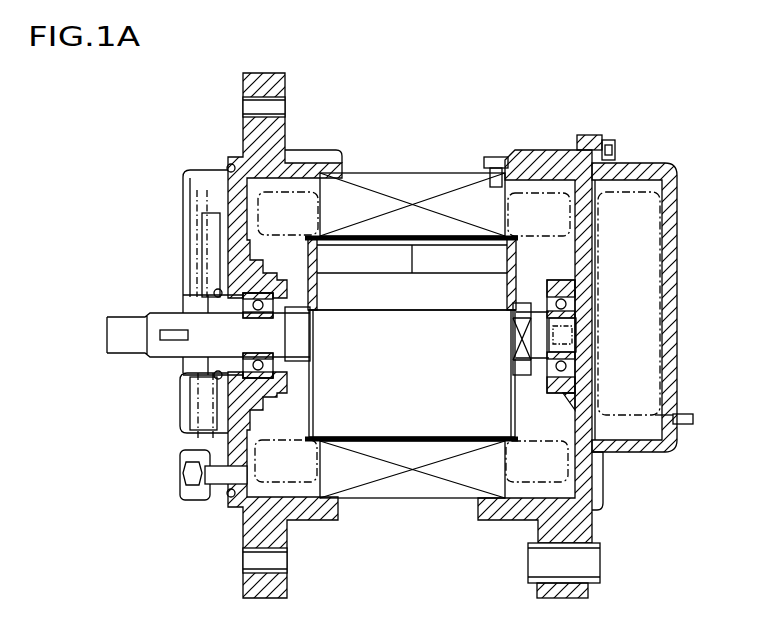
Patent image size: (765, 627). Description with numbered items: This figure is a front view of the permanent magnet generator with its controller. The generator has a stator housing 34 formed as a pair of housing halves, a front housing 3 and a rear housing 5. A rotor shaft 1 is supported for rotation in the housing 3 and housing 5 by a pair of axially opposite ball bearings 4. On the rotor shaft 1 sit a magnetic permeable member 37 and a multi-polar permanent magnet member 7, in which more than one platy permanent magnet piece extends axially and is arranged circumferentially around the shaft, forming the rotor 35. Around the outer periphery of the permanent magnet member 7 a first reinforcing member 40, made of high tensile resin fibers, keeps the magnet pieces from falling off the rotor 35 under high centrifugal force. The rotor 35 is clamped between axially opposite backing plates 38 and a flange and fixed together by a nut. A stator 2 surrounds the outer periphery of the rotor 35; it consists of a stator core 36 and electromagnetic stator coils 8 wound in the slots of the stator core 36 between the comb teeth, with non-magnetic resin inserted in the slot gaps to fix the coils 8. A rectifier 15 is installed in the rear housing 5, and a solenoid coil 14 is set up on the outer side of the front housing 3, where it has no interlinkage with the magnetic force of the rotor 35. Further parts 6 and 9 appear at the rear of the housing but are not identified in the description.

The rotor shaft 1 is at (198, 327).
The stator 2 is at (396, 183).
The front housing 3 is at (255, 157).
The ball bearings 4 is at (240, 370).
The rear housing 5 is at (572, 158).
The fan cover 6 is at (650, 163).
The permanent magnet member 7 is at (457, 253).
The stator coils 8 is at (297, 203).
The cable lead 9 is at (685, 427).
The solenoid coil 14 is at (208, 263).
The rectifier 15 is at (637, 292).
The stator housing 34 is at (268, 132).
The rotor 35 is at (407, 397).
The stator core 36 is at (355, 197).
The magnetic permeable member 37 is at (435, 300).
The backing plate 38 is at (307, 262).
The first reinforcing member 40 is at (413, 238).